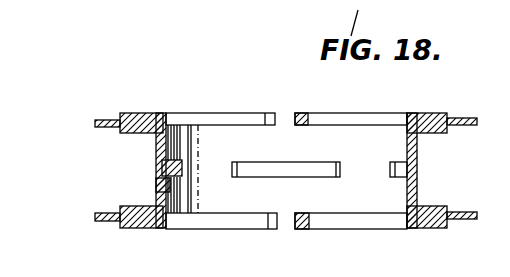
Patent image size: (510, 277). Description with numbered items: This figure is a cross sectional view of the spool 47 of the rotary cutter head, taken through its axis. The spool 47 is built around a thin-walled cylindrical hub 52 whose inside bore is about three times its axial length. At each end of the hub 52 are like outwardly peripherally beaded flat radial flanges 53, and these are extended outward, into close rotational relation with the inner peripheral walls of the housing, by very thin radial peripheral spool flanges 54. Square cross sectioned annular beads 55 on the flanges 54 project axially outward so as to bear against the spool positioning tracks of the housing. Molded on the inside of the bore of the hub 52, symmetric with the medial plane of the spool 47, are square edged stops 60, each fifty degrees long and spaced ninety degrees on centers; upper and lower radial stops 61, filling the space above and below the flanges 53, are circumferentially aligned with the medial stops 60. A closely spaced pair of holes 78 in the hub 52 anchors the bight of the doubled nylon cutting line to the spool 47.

The spool 47 is at (238, 90).
The cylindrical hub 52 is at (408, 183).
The flat radial flanges 53 is at (135, 134).
The radial peripheral spool flanges 54 is at (102, 118).
The annular beads 55 is at (203, 112).
The square edged stops 60 is at (182, 167).
The upper and lower radial stops 61 is at (132, 113).
The pair of holes 78 is at (160, 195).